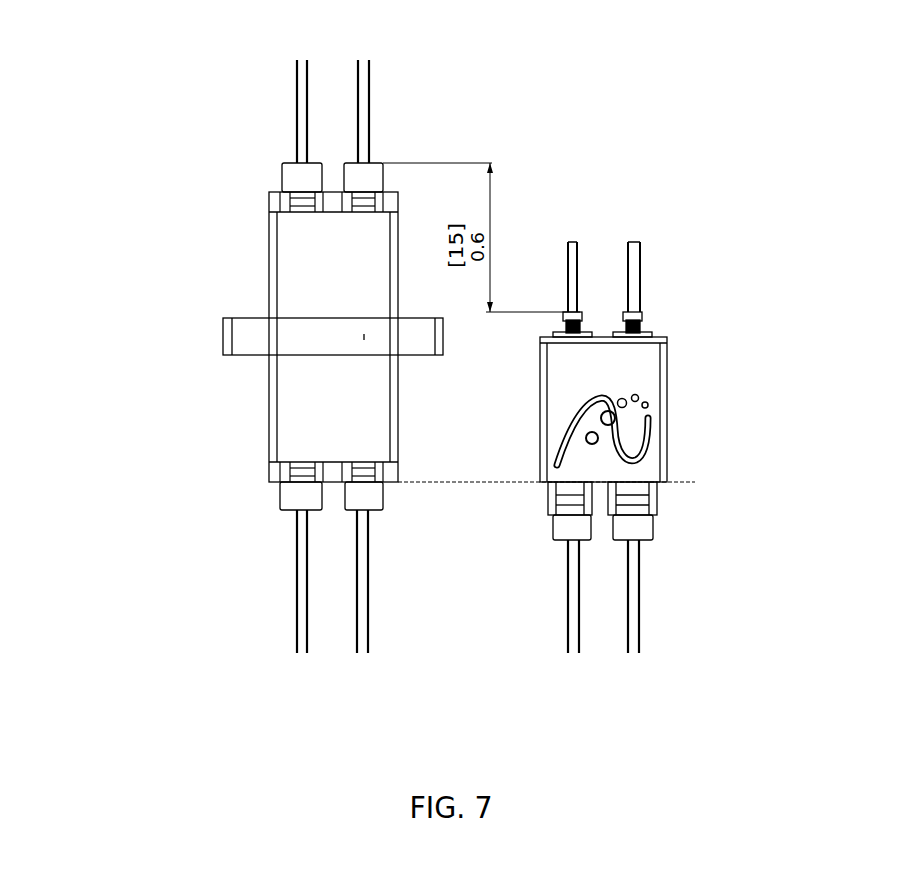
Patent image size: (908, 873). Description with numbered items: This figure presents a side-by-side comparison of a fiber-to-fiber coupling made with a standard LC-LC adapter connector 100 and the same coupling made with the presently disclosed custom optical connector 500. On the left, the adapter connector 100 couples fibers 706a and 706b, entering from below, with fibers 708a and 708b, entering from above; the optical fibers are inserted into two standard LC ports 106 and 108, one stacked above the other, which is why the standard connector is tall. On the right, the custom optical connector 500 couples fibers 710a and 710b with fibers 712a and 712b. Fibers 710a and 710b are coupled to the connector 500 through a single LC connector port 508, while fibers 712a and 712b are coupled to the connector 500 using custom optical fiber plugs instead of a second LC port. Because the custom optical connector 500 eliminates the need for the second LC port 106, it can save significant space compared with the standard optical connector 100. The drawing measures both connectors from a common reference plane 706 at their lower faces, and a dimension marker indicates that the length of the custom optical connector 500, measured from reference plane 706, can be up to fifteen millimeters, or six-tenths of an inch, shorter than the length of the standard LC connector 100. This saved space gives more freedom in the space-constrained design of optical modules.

The standard LC-LC adapter connector 100 is at (224, 332).
The standard LC port 106 is at (333, 265).
The standard LC port 108 is at (333, 408).
The custom optical connector 500 is at (668, 363).
The LC connector port 508 is at (602, 412).
The reference plane 706 is at (857, 422).
The fiber 706a is at (286, 605).
The fiber 706b is at (372, 605).
The fiber 708a is at (287, 91).
The fiber 708b is at (371, 91).
The fiber 710a is at (551, 620).
The fiber 710b is at (636, 620).
The fiber 712a is at (551, 259).
The fiber 712b is at (637, 259).